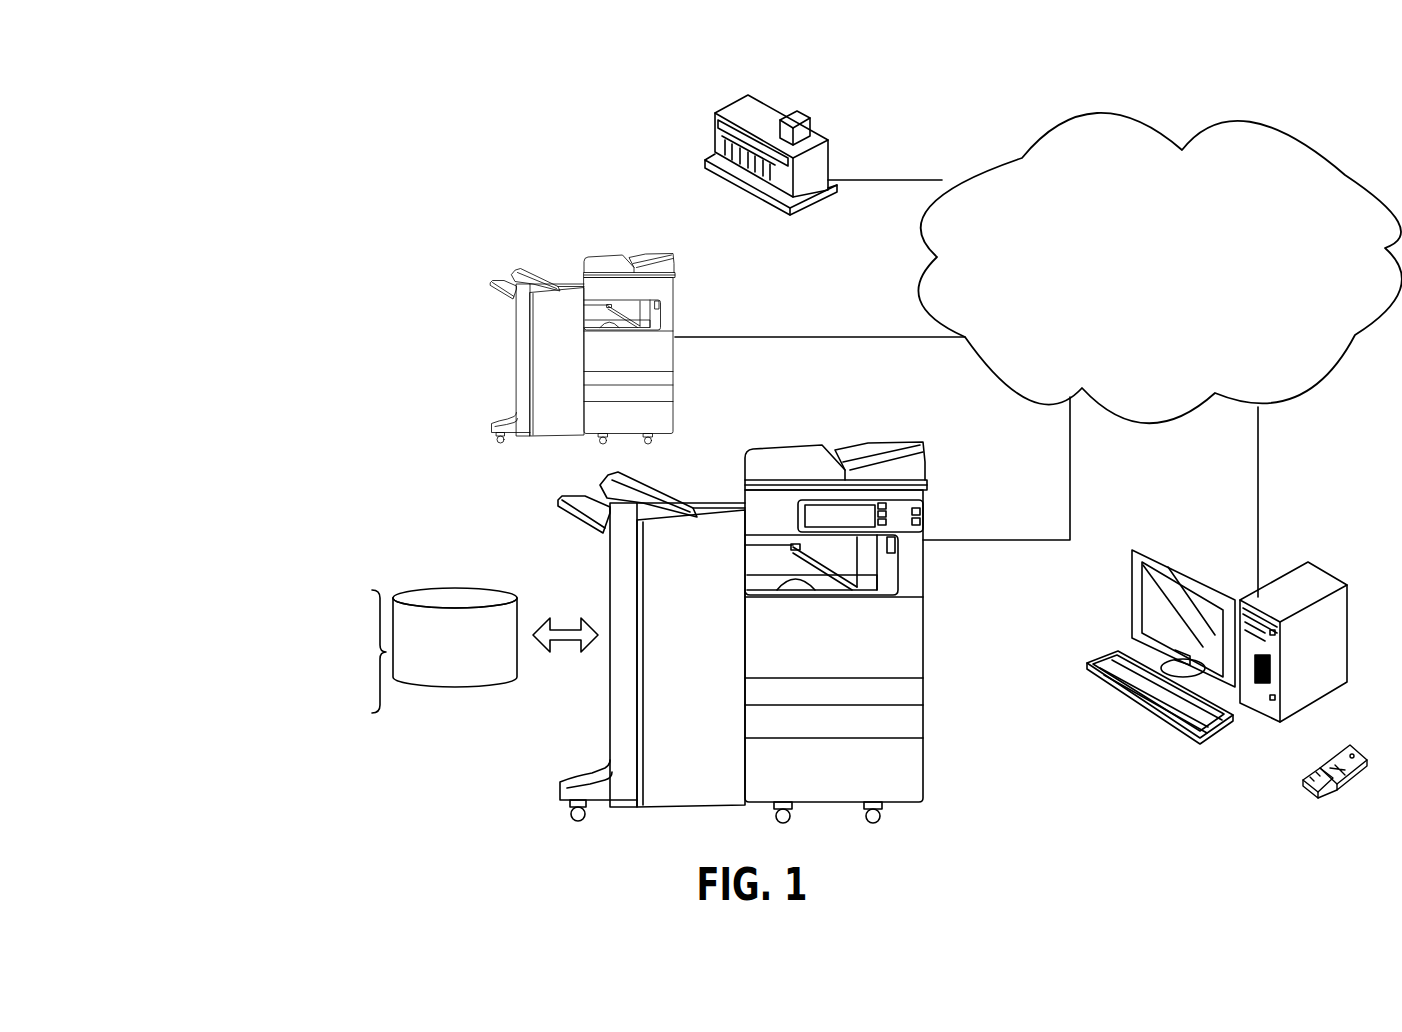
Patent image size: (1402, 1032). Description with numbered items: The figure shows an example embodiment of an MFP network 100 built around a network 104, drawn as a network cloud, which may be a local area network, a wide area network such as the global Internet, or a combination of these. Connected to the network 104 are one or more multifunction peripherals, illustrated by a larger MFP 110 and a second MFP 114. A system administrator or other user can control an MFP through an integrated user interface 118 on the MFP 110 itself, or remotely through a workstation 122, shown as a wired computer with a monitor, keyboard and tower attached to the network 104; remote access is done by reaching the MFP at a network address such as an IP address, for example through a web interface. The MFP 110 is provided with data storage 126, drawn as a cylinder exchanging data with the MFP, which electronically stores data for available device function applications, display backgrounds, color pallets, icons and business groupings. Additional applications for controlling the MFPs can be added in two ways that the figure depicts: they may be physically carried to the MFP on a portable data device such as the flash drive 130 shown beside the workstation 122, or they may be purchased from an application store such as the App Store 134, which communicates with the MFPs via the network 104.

The MFP network 100 is at (1335, 138).
The network 104 is at (1320, 392).
The MFP 110 is at (923, 680).
The MFP 114 is at (515, 332).
The integrated user interface 118 is at (860, 517).
The workstation 122 is at (1328, 570).
The data storage 126 is at (455, 686).
The flash drive 130 is at (1352, 778).
The App Store 134 is at (830, 152).